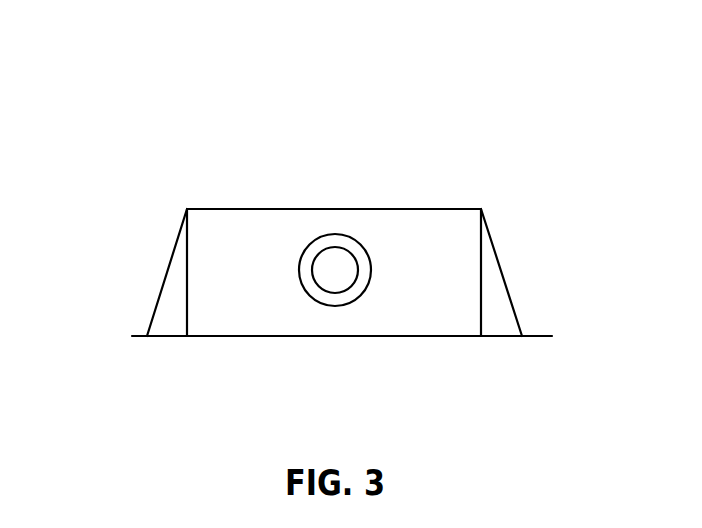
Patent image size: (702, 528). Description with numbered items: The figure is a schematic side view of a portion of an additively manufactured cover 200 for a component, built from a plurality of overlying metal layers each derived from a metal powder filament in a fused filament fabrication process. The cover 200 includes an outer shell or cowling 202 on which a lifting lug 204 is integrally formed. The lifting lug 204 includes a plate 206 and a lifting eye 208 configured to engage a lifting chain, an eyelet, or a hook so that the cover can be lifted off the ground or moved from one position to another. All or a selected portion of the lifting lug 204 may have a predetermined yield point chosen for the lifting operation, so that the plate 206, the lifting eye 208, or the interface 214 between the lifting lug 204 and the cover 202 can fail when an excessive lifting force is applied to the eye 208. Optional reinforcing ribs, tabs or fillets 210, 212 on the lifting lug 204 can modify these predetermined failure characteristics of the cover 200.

The additively manufactured cover 200 is at (124, 109).
The outer shell or cowling 202 is at (145, 333).
The lifting lug 204 is at (243, 194).
The plate 206 is at (413, 220).
The lifting eye 208 is at (337, 240).
The reinforcing rib, tab or fillet 210 is at (175, 265).
The reinforcing rib, tab or fillet 212 is at (495, 282).
The interface 214 is at (388, 337).